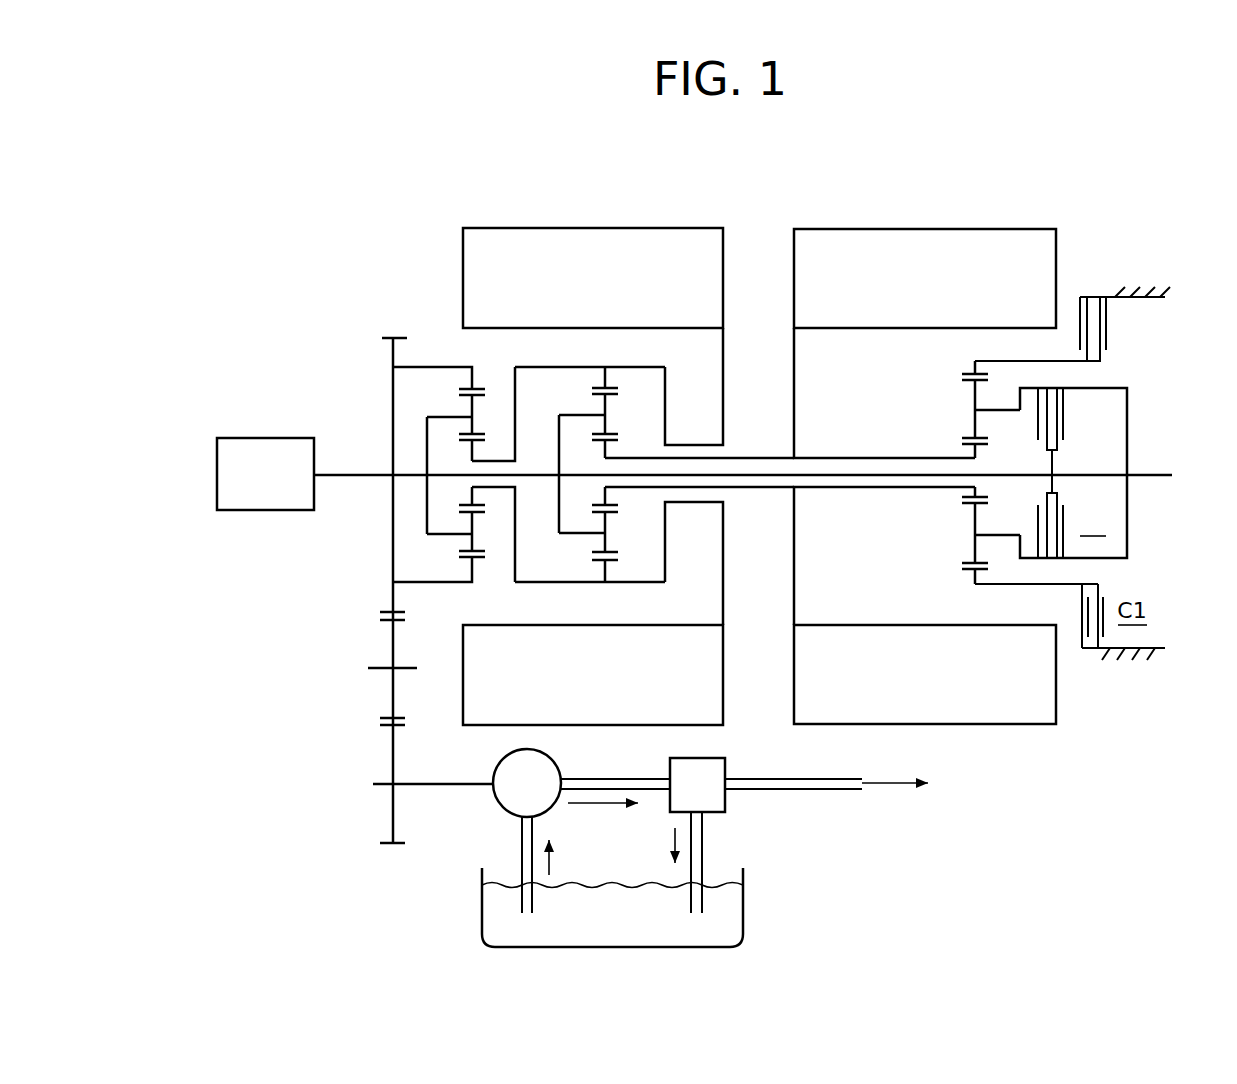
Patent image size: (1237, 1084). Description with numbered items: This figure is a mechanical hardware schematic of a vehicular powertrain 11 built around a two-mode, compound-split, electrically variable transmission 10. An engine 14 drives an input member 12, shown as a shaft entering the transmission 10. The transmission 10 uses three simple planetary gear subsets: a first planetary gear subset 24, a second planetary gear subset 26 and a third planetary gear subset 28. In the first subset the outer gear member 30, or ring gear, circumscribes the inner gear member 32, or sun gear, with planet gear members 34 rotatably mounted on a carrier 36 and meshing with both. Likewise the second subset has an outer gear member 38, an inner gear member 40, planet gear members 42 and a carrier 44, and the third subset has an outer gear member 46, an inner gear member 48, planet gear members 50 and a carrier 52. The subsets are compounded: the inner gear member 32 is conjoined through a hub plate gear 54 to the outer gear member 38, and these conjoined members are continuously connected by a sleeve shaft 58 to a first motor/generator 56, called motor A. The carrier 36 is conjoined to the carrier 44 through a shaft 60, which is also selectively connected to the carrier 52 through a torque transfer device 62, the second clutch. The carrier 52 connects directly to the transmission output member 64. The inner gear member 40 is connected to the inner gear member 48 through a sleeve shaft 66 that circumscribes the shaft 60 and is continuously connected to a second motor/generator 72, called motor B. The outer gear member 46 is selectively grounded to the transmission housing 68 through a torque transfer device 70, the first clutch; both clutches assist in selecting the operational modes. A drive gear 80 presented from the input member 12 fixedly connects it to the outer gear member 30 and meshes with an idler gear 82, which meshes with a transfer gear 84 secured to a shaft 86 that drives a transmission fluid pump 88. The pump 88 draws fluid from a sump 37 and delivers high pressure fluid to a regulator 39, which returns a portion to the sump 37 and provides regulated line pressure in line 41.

The electrically variable transmission 10 is at (753, 217).
The vehicular powertrain 11 is at (332, 345).
The input member 12 is at (355, 473).
The engine 14 is at (278, 483).
The first planetary gear subset 24 is at (440, 360).
The second planetary gear subset 26 is at (625, 390).
The third planetary gear subset 28 is at (935, 395).
The outer gear member 30 is at (477, 387).
The inner gear member 32 is at (477, 443).
The planet gear members 34 is at (462, 396).
The carrier 36 is at (427, 507).
The sump 37 is at (743, 908).
The outer gear member 38 is at (598, 390).
The regulator 39 is at (725, 807).
The inner gear member 40 is at (590, 505).
The line 41 is at (855, 793).
The planet gear members 42 is at (618, 436).
The carrier 44 is at (555, 518).
The outer gear member 46 is at (972, 370).
The inner gear member 48 is at (980, 497).
The planet gear members 50 is at (975, 420).
The carrier 52 is at (1100, 388).
The hub plate gear 54 is at (510, 414).
The first motor/generator 56 is at (578, 291).
The sleeve shaft 58 is at (700, 440).
The shaft 60 is at (753, 458).
The torque transfer device 62 is at (1063, 408).
The transmission output member 64 is at (1150, 473).
The sleeve shaft 66 is at (813, 457).
The transmission housing 68 is at (1152, 288).
The torque transfer device 70 is at (1106, 317).
The second motor/generator 72 is at (913, 291).
The drive gear 80 is at (387, 547).
The idler gear 82 is at (392, 692).
The transfer gear 84 is at (392, 753).
The shaft 86 is at (432, 787).
The transmission fluid pump 88 is at (540, 773).